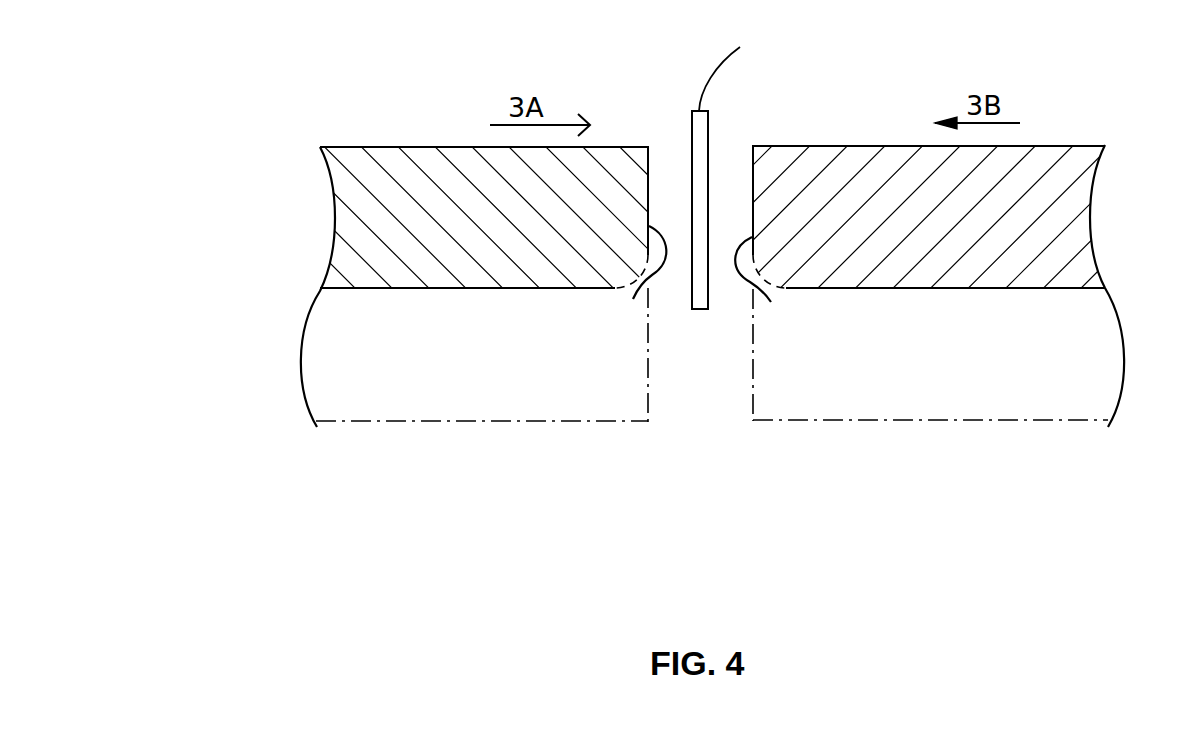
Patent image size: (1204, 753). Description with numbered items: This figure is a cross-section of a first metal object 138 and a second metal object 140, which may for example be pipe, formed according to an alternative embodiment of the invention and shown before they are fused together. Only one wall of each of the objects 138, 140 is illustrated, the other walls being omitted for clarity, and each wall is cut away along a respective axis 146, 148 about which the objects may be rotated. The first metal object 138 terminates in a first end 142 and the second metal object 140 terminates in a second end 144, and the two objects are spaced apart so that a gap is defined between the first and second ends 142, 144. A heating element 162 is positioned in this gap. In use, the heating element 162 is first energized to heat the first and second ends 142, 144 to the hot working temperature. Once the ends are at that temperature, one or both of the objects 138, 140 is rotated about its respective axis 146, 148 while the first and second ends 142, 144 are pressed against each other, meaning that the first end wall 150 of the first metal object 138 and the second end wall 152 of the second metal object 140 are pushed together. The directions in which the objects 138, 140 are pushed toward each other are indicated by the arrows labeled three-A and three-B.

The first metal object 138 is at (471, 283).
The second metal object 140 is at (911, 283).
The first end 142 is at (622, 211).
The second end 144 is at (822, 211).
The axis 146 is at (500, 420).
The axis 148 is at (918, 420).
The first end wall 150 is at (632, 279).
The second end wall 152 is at (776, 285).
The heating element 162 is at (708, 135).